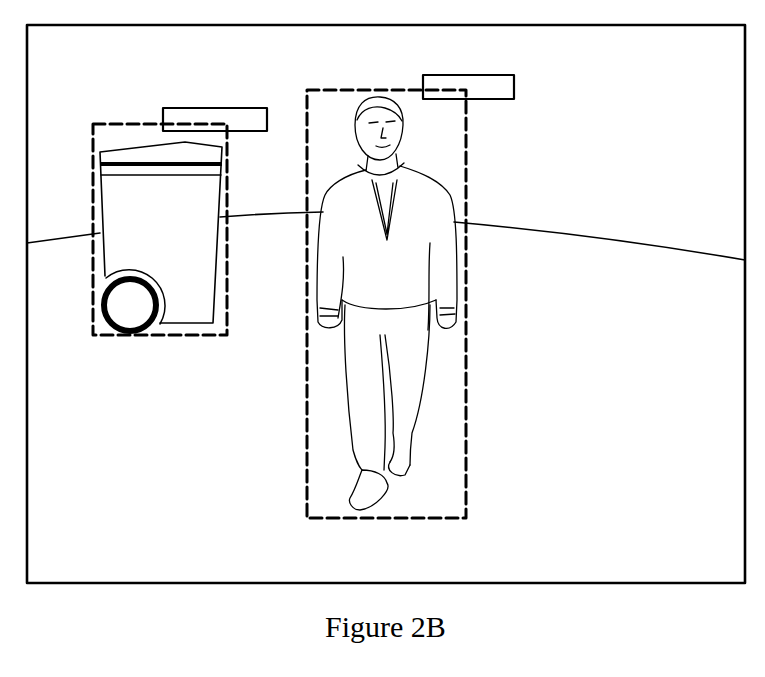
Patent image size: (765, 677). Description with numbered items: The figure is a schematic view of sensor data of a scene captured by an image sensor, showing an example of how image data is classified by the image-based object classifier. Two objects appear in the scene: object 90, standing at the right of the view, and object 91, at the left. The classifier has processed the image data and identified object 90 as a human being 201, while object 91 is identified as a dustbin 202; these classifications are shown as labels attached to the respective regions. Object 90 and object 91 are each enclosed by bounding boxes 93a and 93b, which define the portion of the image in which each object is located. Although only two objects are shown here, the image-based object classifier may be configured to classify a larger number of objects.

The object 90 is at (423, 214).
The object 91 is at (135, 208).
The bounding box 93a is at (466, 355).
The bounding box 93b is at (178, 337).
The human being 201 is at (468, 87).
The dustbin 202 is at (215, 120).